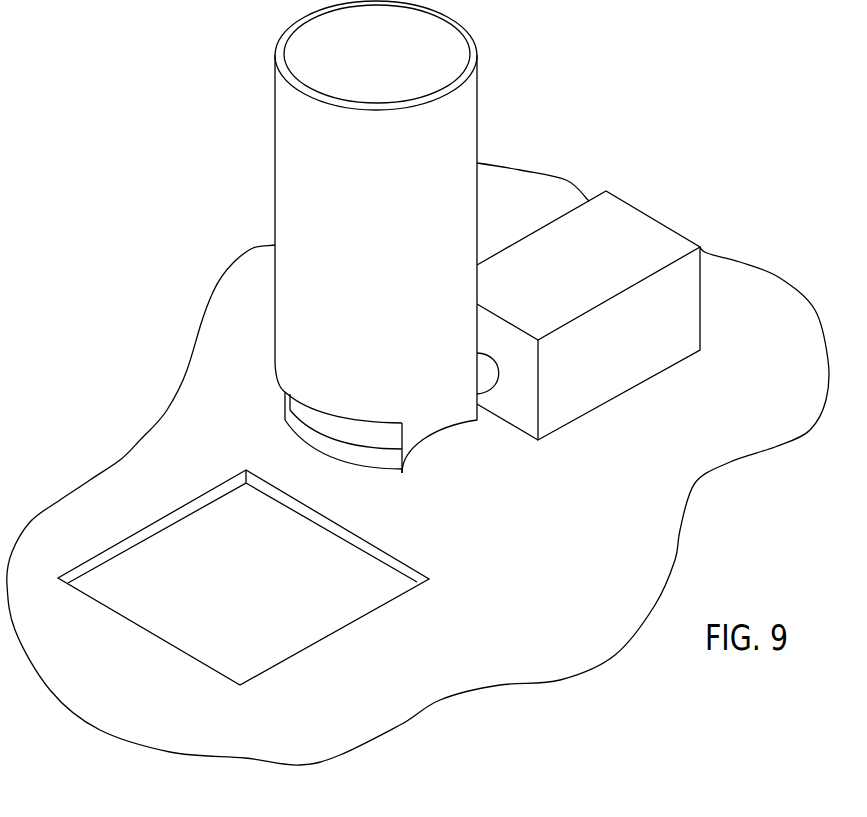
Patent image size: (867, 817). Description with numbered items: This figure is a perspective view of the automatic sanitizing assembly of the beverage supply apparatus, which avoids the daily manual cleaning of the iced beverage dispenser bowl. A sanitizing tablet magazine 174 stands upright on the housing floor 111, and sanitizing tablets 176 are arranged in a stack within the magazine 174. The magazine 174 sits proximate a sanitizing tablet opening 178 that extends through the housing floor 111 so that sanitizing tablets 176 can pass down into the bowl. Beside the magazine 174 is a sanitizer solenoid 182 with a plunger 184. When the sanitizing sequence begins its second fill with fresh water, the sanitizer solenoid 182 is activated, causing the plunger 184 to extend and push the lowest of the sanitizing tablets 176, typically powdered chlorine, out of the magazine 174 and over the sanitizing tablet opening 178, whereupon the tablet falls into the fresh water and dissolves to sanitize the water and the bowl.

The housing floor 111 is at (120, 470).
The sanitizing tablet magazine 174 is at (466, 116).
The sanitizing tablets 176 is at (378, 460).
The sanitizing tablet opening 178 is at (325, 615).
The sanitizer solenoid 182 is at (668, 352).
The plunger 184 is at (487, 381).